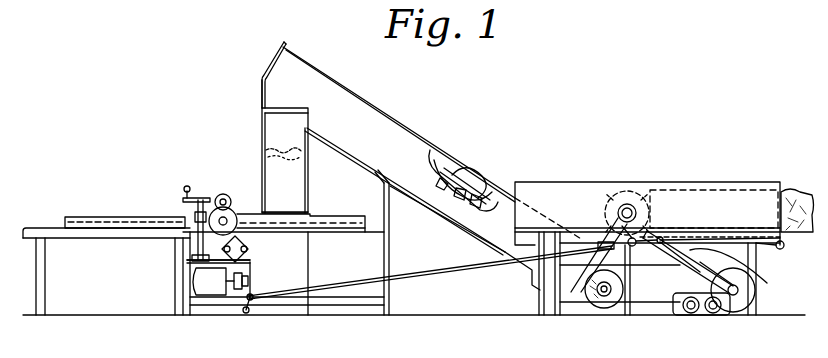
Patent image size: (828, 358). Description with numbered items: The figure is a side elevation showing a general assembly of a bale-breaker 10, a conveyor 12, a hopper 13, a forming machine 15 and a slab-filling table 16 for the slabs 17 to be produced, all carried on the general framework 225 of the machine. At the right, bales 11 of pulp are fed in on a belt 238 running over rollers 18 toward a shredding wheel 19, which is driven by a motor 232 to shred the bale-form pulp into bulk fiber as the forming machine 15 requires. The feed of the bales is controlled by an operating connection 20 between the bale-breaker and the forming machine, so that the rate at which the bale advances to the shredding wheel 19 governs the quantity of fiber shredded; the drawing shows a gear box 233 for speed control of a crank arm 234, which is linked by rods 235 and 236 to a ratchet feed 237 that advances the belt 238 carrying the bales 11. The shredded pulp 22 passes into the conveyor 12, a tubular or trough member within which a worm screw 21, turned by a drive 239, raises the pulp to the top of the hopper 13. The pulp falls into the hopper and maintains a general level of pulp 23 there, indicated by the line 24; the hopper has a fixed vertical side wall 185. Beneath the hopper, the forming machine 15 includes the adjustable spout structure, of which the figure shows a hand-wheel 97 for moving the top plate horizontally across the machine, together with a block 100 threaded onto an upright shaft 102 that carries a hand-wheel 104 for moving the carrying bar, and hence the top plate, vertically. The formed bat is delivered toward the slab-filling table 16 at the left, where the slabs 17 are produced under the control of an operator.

The bale-breaker 10 is at (660, 164).
The bales 11 is at (716, 178).
The conveyor 12 is at (482, 144).
The hopper 13 is at (308, 181).
The forming machine 15 is at (238, 205).
The slab-filling table 16 is at (112, 278).
The slabs 17 is at (103, 258).
The rollers 18 is at (668, 228).
The shredding wheel 19 is at (602, 192).
The operating connection 20 is at (430, 272).
The worm screw 21 is at (446, 208).
The shredded pulp 22 is at (460, 212).
The pulp 23 is at (304, 156).
The line 24 is at (274, 148).
The hand-wheel 97 is at (237, 186).
The block 100 is at (190, 220).
The upright shaft 102 is at (198, 246).
The hand-wheel 104 is at (216, 177).
The fixed vertical side wall 185 is at (285, 196).
The general framework 225 is at (387, 306).
The motor 232 is at (742, 272).
The gear box 233 is at (688, 316).
The crank arm 234 is at (734, 292).
The rod 235 is at (720, 223).
The rod 236 is at (682, 264).
The ratchet feed 237 is at (724, 212).
The belt 238 is at (781, 249).
The drive 239 is at (600, 310).